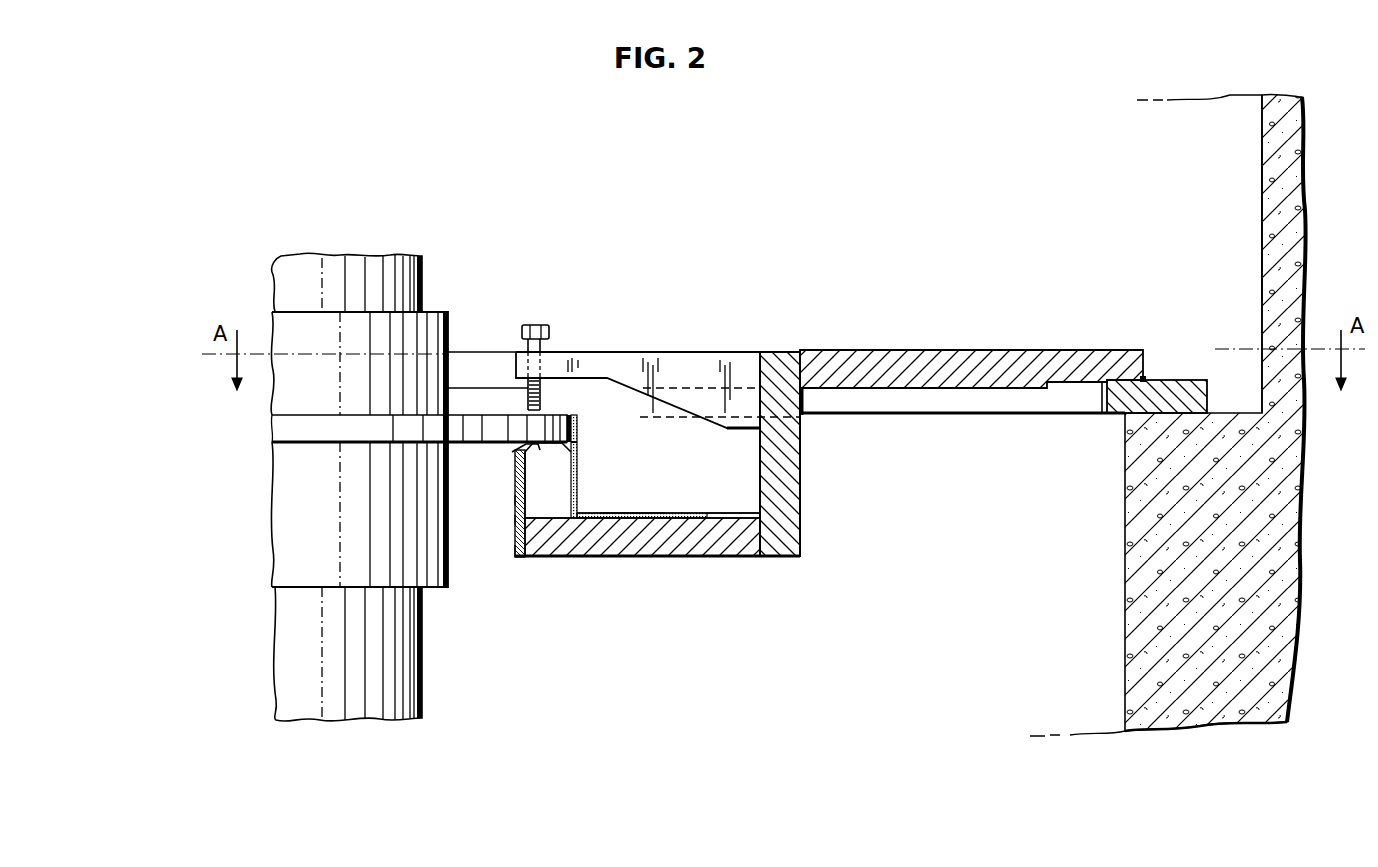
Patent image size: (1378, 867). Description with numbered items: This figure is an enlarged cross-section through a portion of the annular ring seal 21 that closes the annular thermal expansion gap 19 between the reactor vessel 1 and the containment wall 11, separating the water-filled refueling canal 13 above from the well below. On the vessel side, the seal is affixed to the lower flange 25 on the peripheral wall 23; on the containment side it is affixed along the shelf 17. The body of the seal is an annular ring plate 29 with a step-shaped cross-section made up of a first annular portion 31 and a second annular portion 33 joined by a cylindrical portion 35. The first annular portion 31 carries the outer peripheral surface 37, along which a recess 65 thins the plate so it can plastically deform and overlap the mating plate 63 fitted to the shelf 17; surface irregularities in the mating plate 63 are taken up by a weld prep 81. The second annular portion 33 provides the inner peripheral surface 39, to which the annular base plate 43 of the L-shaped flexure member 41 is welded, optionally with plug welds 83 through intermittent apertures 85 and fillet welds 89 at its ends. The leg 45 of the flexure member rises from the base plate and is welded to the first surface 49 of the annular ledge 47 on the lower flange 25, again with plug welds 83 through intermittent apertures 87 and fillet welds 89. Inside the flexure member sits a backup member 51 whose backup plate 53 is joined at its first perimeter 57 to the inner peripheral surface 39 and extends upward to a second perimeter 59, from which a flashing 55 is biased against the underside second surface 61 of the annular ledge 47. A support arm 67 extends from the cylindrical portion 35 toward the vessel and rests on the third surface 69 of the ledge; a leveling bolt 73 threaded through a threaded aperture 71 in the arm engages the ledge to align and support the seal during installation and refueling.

The reactor vessel 1 is at (346, 242).
The containment wall 11 is at (1268, 208).
The refueling canal 13 is at (1161, 162).
The shelf 17 is at (1233, 408).
The annular thermal expansion gap 19 is at (802, 637).
The annular ring seal 21 is at (842, 290).
The peripheral wall 23 is at (392, 678).
The lower flange 25 is at (428, 325).
The annular ring plate 29 is at (918, 349).
The first annular portion 31 is at (1012, 358).
The second annular portion 33 is at (625, 545).
The cylindrical portion 35 is at (785, 472).
The outer peripheral surface 37 is at (1086, 400).
The inner peripheral surface 39 is at (563, 505).
The flexure member 41 is at (617, 513).
The annular base plate 43 is at (650, 513).
The leg 45 is at (578, 480).
The annular ledge 47 is at (462, 432).
The first surface 49 is at (577, 420).
The backup member 51 is at (513, 498).
The backup plate 53 is at (513, 517).
The flashing 55 is at (516, 452).
The first perimeter 57 is at (515, 556).
The second perimeter 59 is at (517, 470).
The second surface 61 is at (578, 455).
The mating plate 63 is at (1190, 392).
The recess 65 is at (1055, 388).
The support arm 67 is at (693, 358).
The third surface 69 is at (489, 412).
The threaded aperture 71 is at (545, 372).
The leveling bolt 73 is at (537, 323).
The weld prep 81 is at (1148, 377).
The plug welds 83 is at (585, 445).
The intermittent apertures 85 is at (677, 513).
The intermittent apertures 87 is at (580, 432).
The fillet welds 89 is at (578, 418).